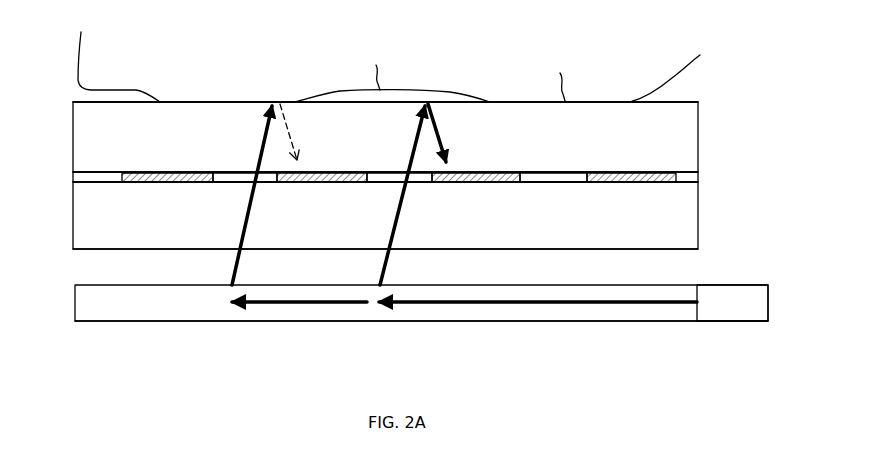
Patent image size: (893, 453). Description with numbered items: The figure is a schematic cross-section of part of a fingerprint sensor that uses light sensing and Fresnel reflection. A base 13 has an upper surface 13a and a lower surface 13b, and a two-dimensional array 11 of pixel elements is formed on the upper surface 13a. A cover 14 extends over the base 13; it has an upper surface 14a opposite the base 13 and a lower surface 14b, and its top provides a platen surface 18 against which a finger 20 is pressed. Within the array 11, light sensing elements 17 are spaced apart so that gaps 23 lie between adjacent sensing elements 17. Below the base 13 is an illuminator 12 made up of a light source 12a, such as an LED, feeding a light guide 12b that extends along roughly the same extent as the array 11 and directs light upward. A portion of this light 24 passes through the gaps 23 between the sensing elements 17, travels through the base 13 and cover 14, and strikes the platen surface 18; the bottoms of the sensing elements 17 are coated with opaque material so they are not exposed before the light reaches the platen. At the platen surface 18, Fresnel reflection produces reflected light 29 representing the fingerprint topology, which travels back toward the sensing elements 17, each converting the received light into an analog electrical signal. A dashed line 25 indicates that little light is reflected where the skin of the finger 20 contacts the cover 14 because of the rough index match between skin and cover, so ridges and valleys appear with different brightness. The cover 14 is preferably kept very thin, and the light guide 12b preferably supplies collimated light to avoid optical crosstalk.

The finger 20 is at (700, 62).
The platen surface 18 is at (690, 102).
The cover 14 is at (698, 143).
The upper surface of cover 14a is at (100, 107).
The lower surface of cover 14b is at (96, 168).
The two-dimensional array 11 is at (67, 168).
The base 13 is at (698, 239).
The upper surface of base 13a is at (97, 186).
The lower surface of base 13b is at (97, 248).
The sensing element 17 is at (170, 183).
The gaps 23 is at (239, 172).
The illuminator 12 is at (571, 321).
The light source 12a is at (729, 321).
The light guide 12b is at (357, 321).
The light 24 is at (238, 270).
The dashed line 25 is at (290, 133).
The reflected light 29 is at (437, 127).